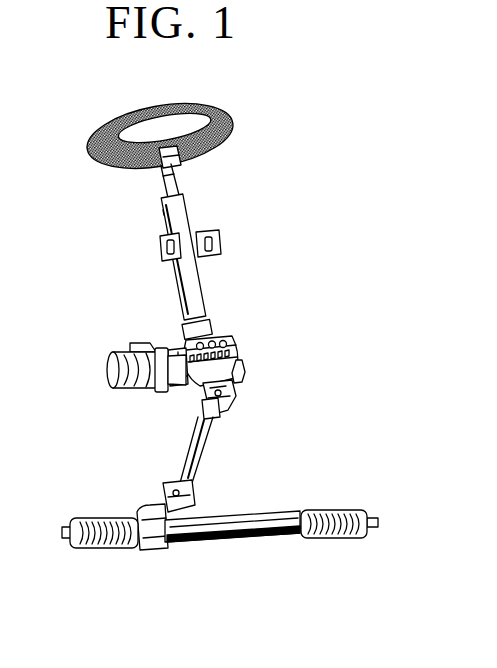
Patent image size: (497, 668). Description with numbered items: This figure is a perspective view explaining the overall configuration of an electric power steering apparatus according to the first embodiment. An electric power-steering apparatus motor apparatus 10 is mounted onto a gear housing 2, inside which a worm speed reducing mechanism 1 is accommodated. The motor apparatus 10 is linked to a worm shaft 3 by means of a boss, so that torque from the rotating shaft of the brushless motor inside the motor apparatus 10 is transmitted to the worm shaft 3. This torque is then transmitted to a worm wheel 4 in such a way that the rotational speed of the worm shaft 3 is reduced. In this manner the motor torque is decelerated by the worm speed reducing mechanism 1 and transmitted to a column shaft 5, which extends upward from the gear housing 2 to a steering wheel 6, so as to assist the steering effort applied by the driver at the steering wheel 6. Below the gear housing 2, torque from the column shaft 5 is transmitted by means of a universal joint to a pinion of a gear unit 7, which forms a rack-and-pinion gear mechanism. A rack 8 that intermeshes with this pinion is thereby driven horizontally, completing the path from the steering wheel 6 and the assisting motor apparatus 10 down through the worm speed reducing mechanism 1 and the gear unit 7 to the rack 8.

The worm speed reducing mechanism 1 is at (218, 380).
The gear housing 2 is at (178, 352).
The worm shaft 3 is at (178, 393).
The worm wheel 4 is at (254, 344).
The column shaft 5 is at (247, 383).
The steering wheel 6 is at (178, 119).
The gear unit 7 is at (150, 553).
The rack 8 is at (237, 538).
The electric power-steering apparatus motor apparatus 10 is at (118, 393).